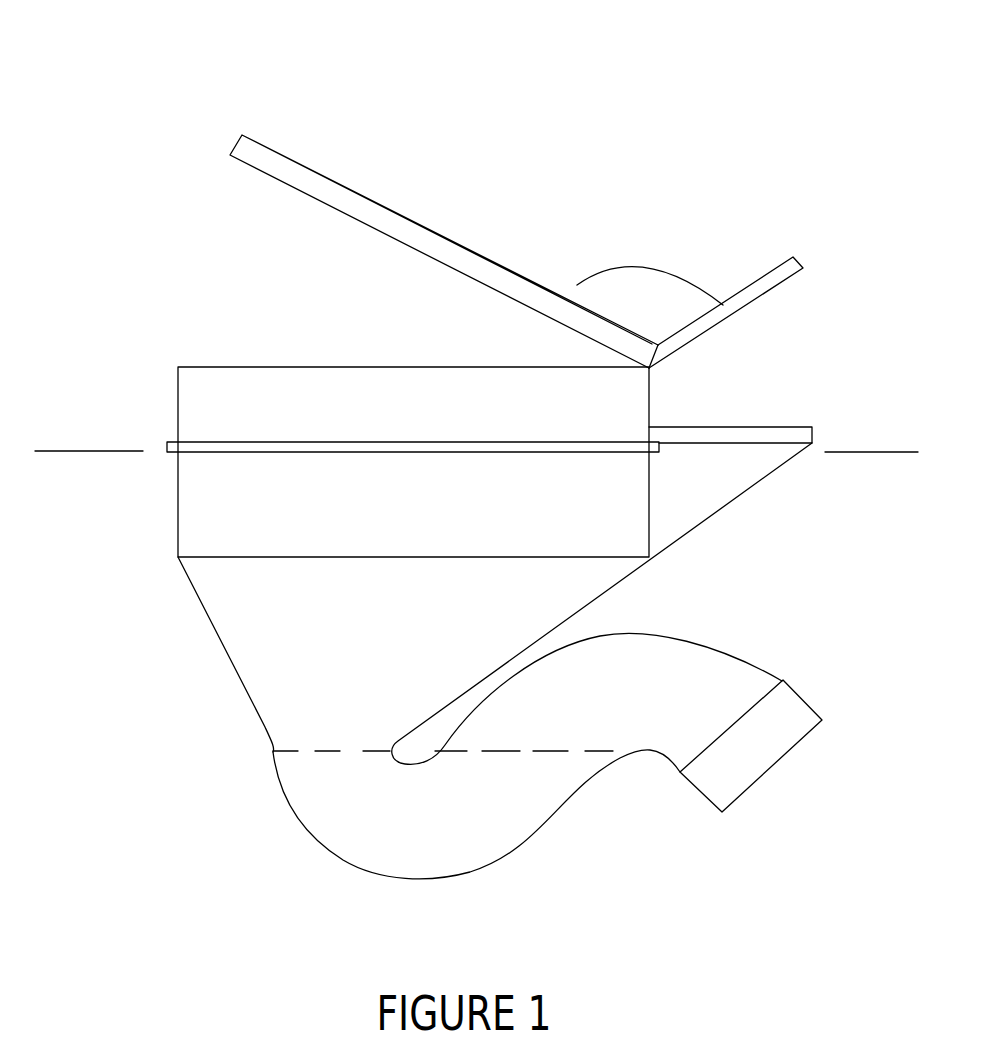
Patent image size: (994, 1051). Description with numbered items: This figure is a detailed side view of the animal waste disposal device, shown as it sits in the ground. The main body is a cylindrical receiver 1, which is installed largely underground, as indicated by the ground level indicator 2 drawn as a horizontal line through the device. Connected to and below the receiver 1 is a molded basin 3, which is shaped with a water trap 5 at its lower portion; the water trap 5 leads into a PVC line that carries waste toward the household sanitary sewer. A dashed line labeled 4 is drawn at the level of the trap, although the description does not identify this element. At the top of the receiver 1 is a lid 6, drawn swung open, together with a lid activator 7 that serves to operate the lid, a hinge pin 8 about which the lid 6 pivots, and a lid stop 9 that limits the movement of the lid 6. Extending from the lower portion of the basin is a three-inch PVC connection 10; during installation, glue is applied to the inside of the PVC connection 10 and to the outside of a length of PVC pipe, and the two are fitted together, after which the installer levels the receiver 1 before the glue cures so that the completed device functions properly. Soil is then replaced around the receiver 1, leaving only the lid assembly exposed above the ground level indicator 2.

The cylindrical receiver 1 is at (223, 410).
The ground level indicator 2 is at (127, 452).
The molded basin 3 is at (300, 645).
The liquid level 4 is at (327, 747).
The water trap 5 is at (375, 827).
The lid 6 is at (332, 158).
The lid activator 7 is at (768, 268).
The hinge pin 8 is at (649, 368).
The lid stop 9 is at (812, 447).
The PVC connection 10 is at (780, 682).